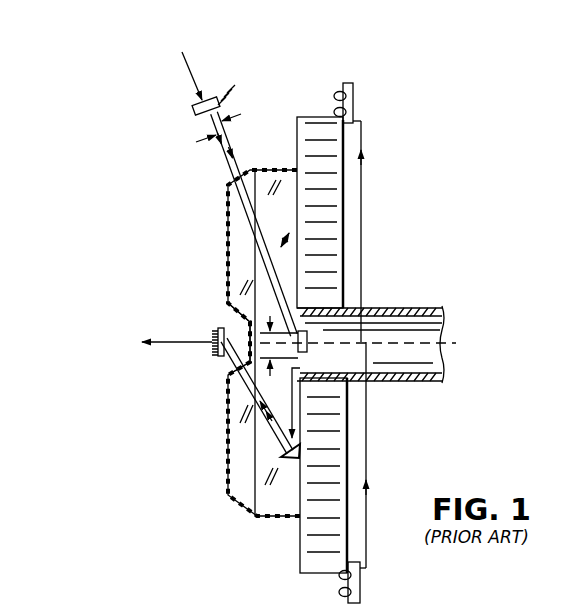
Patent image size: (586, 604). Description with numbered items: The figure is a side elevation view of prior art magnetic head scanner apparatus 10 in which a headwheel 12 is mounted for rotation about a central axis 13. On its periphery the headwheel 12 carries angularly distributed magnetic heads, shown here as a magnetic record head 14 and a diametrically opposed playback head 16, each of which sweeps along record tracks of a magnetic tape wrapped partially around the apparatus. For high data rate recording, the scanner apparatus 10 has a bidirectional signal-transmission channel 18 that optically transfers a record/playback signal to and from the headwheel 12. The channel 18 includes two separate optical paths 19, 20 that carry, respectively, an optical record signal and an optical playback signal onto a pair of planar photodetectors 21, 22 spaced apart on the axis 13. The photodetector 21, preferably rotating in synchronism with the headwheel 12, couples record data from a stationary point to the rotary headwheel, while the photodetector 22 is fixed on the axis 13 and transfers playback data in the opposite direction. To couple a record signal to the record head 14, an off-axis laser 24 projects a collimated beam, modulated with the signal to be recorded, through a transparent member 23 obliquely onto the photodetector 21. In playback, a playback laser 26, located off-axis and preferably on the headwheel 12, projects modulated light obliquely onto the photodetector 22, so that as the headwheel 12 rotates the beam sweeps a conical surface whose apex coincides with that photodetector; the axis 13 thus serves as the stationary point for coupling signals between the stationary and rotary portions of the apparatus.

The magnetic head scanner apparatus 10 is at (200, 493).
The headwheel 12 is at (306, 117).
The central axis 13 is at (454, 356).
The magnetic record head 14 is at (350, 84).
The playback head 16 is at (362, 576).
The bidirectional signal-transmission channel 18 is at (263, 143).
The optical path 19 is at (230, 177).
The optical path 20 is at (222, 358).
The photodetector 21 is at (310, 345).
The photodetector 22 is at (228, 316).
The transparent member 23 is at (228, 236).
The laser 24 is at (200, 112).
The playback laser 26 is at (290, 462).